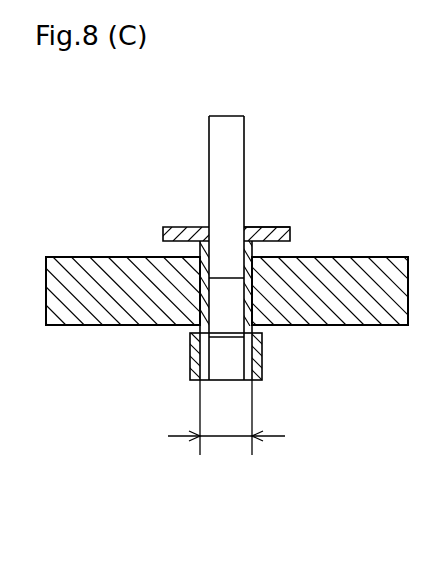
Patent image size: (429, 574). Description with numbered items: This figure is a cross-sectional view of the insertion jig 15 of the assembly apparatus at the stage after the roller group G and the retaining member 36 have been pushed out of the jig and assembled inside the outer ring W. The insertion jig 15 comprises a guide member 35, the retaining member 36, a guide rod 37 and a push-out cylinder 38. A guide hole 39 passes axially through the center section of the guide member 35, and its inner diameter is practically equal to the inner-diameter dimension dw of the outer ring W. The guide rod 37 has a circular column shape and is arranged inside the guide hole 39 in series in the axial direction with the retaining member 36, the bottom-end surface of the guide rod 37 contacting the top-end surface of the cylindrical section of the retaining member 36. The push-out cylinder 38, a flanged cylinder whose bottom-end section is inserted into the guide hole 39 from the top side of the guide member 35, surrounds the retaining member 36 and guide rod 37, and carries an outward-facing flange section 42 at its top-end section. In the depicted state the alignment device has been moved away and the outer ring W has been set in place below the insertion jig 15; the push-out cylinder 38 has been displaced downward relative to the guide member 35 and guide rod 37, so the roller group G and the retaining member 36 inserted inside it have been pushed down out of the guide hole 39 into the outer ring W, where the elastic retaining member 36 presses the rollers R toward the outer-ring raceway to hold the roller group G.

The insertion jig 15 is at (183, 248).
The guide member 35 is at (68, 276).
The retaining member 36 is at (232, 368).
The guide rod 37 is at (235, 140).
The push-out cylinder 38 is at (175, 227).
The guide hole 39 is at (204, 307).
The outward-facing flange section 42 is at (268, 227).
The rollers R is at (207, 352).
The roller group G is at (252, 340).
The outer ring W is at (190, 369).
The inner-diameter dimension of the outer ring dw is at (225, 437).